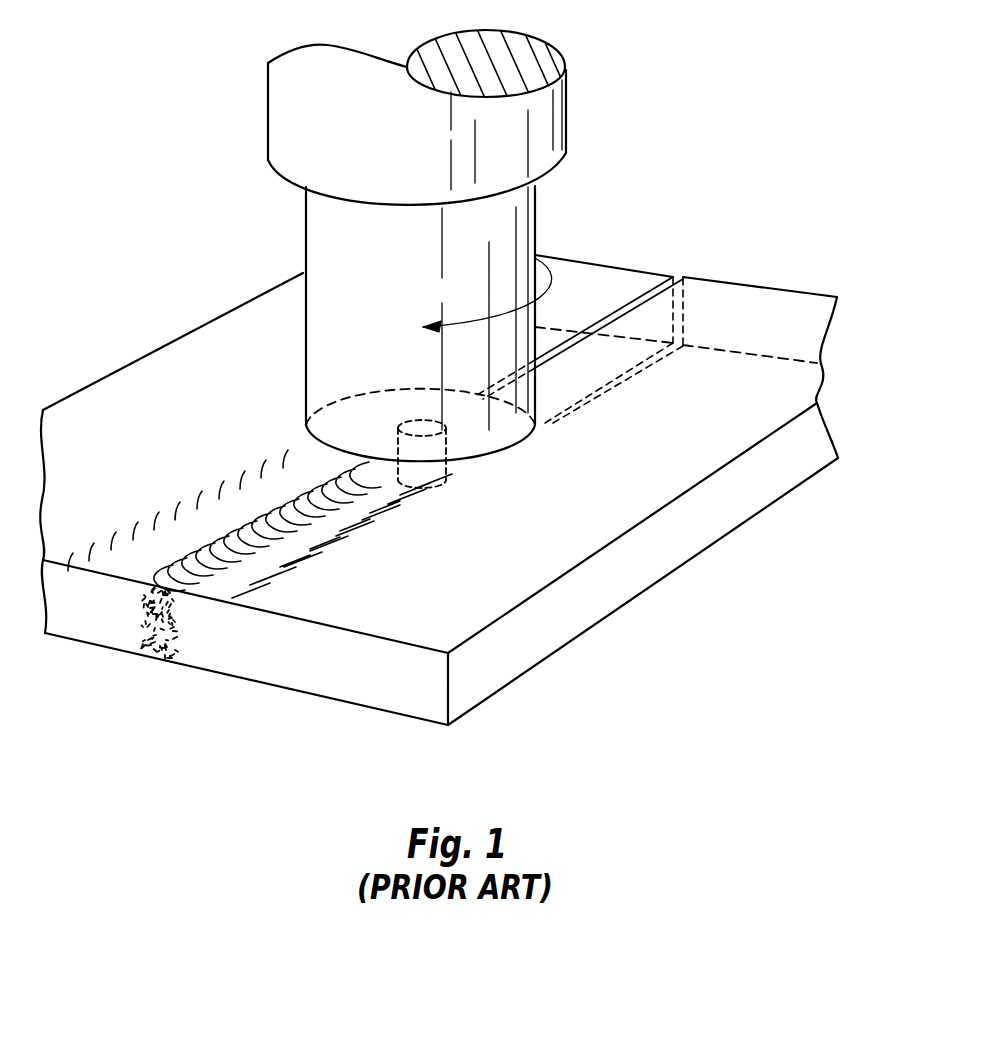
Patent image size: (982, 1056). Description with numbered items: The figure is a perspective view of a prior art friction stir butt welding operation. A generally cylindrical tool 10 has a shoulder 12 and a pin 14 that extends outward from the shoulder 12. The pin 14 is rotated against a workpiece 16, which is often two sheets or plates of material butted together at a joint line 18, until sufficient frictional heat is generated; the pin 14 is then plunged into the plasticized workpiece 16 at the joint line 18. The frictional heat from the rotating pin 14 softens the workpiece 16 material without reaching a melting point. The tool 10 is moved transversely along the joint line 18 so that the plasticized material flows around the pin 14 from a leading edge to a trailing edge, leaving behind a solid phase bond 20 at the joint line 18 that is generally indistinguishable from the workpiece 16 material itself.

The tool 10 is at (535, 208).
The shoulder 12 is at (507, 430).
The pin 14 is at (463, 455).
The workpiece 16 is at (747, 308).
The joint line 18 is at (673, 277).
The solid phase bond 20 is at (303, 447).